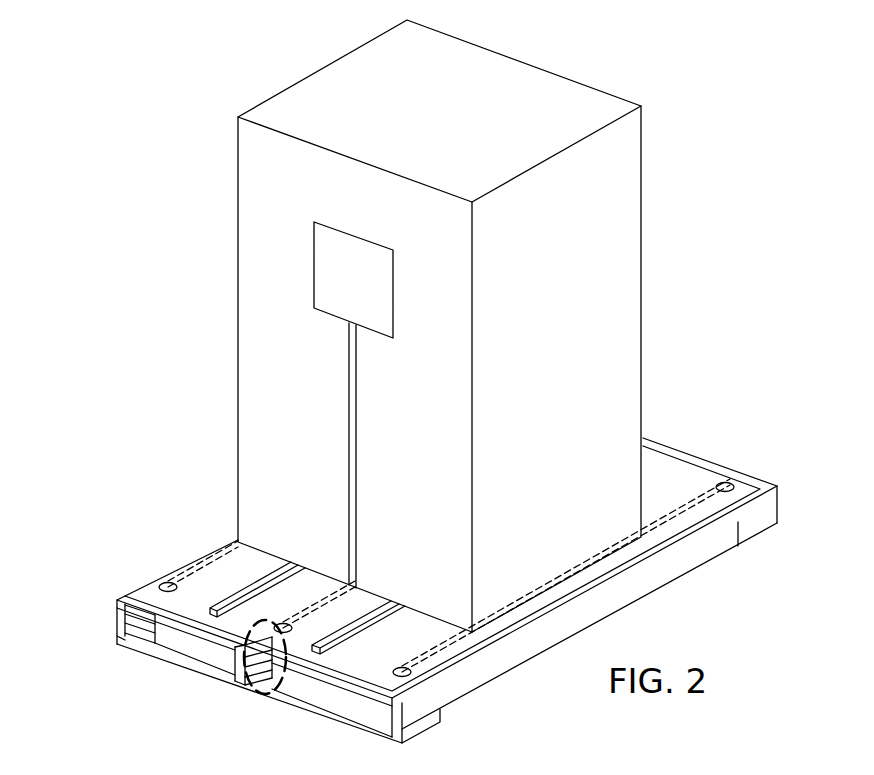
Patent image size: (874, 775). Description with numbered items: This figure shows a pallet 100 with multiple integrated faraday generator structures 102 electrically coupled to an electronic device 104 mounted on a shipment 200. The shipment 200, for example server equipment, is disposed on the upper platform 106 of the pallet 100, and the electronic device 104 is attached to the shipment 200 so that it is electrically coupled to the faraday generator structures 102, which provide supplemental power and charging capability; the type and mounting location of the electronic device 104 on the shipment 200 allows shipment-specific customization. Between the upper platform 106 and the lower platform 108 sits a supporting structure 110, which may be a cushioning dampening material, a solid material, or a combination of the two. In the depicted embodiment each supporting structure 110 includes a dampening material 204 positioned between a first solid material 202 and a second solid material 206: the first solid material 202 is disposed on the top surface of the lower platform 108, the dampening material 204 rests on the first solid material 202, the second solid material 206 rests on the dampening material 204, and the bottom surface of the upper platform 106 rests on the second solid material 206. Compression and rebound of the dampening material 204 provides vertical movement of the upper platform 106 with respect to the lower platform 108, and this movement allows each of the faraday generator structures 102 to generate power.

The pallet 100 is at (429, 575).
The faraday generator structures 102 is at (281, 624).
The electronic device 104 is at (328, 385).
The upper platform 106 is at (691, 452).
The lower platform 108 is at (165, 655).
The supporting structure 110 is at (227, 687).
The shipment 200 is at (367, 326).
The first solid material 202 is at (262, 690).
The dampening material 204 is at (284, 678).
The second solid material 206 is at (235, 655).